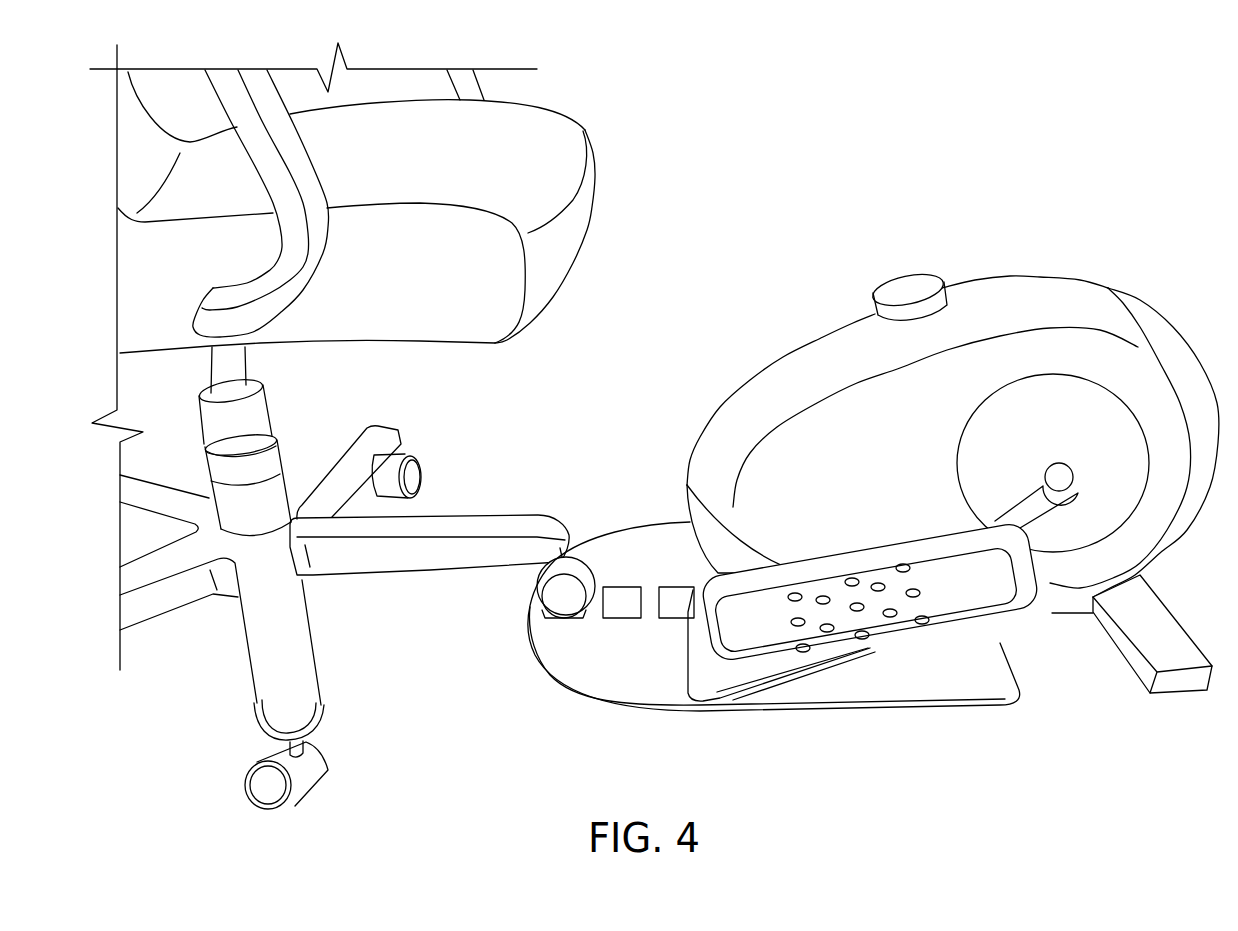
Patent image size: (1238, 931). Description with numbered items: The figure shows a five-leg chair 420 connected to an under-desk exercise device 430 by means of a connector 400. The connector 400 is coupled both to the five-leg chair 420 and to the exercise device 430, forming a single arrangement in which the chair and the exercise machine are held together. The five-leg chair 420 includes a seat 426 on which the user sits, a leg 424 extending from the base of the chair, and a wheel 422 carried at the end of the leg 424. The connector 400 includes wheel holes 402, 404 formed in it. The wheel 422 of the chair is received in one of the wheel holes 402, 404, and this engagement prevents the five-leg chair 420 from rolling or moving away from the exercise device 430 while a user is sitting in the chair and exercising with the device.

The connector 400 is at (739, 601).
The wheel hole 402 is at (548, 622).
The wheel hole 404 is at (622, 597).
The five-leg chair 420 is at (400, 439).
The wheel 422 is at (562, 596).
The leg 424 is at (452, 517).
The seat 426 is at (577, 230).
The exercise device 430 is at (978, 268).